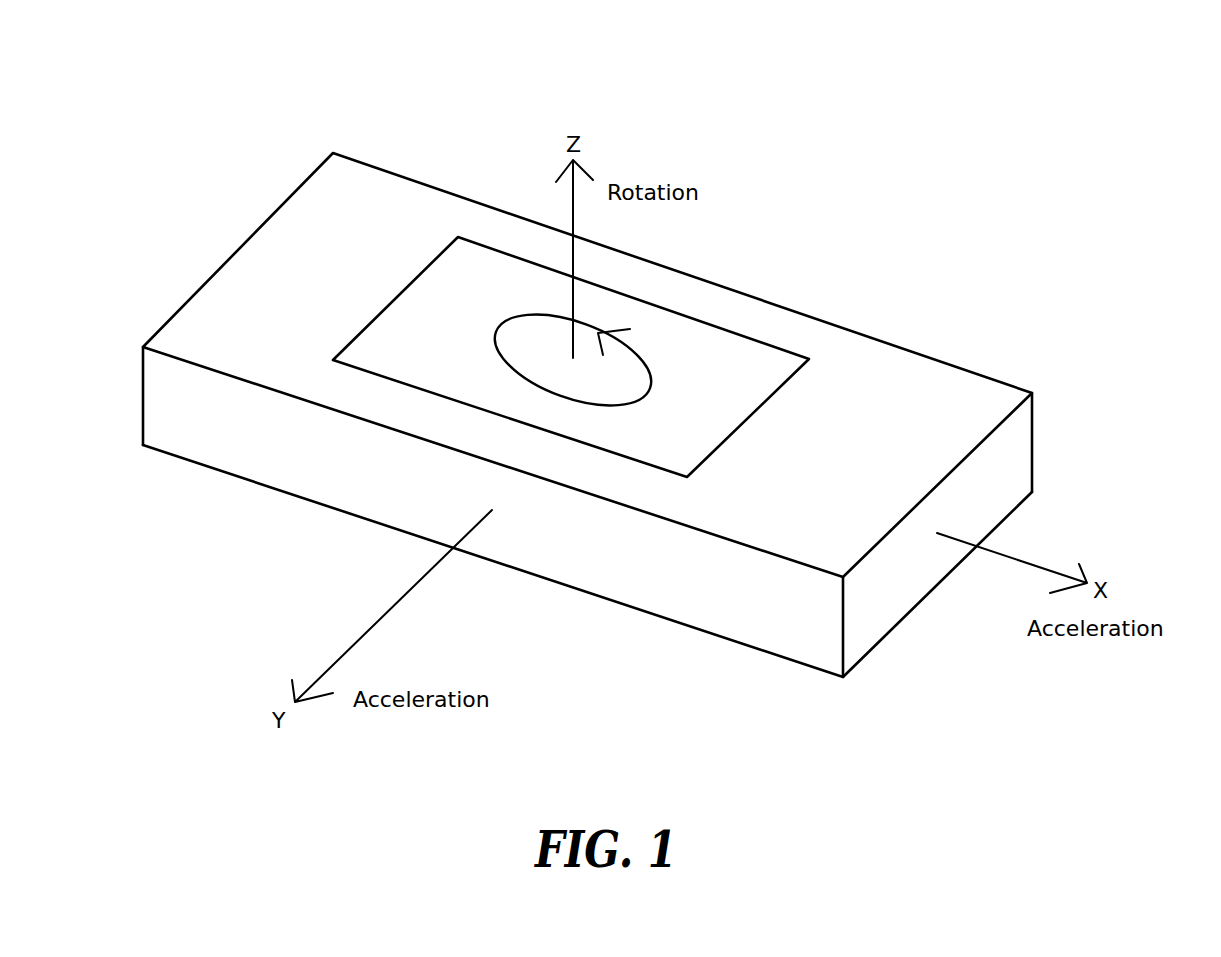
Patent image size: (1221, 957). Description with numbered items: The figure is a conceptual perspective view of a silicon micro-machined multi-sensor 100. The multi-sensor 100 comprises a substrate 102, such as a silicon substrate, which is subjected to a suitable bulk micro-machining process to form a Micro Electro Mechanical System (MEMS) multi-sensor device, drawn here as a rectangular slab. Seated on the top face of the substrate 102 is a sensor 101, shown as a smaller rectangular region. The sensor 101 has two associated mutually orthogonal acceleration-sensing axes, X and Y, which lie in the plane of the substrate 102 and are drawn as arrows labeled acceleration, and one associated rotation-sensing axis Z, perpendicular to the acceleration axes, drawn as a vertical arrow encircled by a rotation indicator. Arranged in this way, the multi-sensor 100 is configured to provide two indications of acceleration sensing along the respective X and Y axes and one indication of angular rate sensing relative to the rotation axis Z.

The micro-machined multi-sensor 100 is at (670, 370).
The sensor 101 is at (425, 362).
The substrate 102 is at (896, 344).